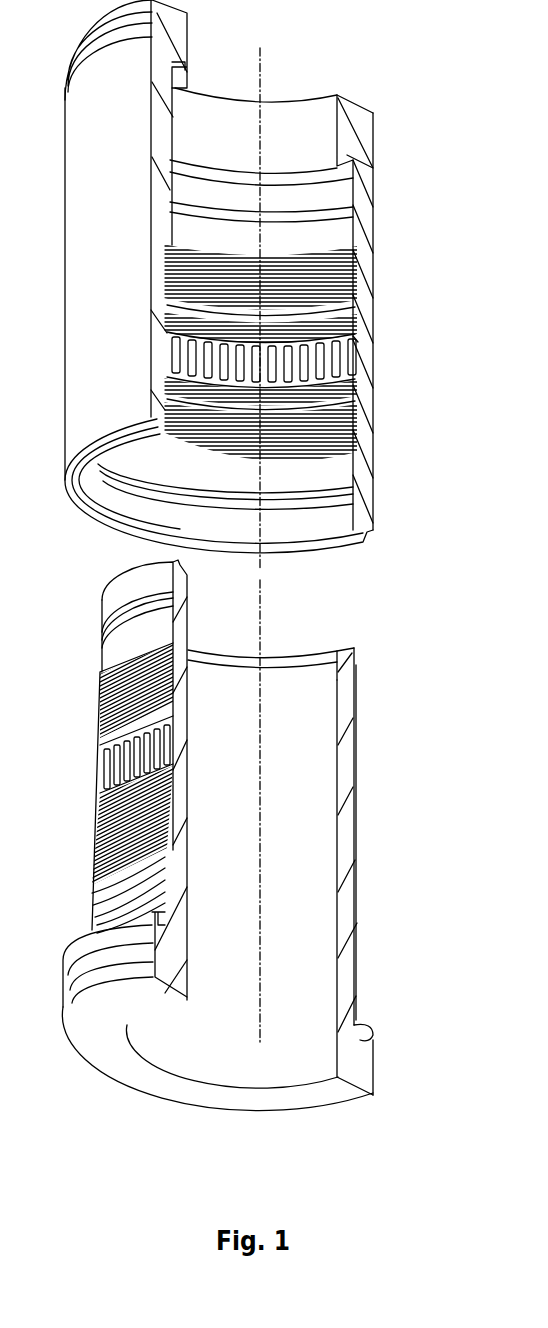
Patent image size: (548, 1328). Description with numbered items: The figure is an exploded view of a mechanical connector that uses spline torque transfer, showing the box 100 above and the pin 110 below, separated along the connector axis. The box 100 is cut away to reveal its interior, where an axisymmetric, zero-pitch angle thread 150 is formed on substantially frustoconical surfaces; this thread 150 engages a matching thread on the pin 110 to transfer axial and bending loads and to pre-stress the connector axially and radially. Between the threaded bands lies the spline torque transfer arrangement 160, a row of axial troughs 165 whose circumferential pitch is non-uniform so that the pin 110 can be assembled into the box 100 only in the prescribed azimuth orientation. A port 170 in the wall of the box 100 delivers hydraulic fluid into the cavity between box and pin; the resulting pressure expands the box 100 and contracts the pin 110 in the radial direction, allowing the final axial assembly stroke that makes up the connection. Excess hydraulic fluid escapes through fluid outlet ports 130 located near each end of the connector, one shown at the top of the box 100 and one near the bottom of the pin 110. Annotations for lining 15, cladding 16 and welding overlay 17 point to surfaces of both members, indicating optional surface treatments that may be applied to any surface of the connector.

The box 100 is at (371, 112).
The fluid outlet port 130 is at (373, 172).
The zero-pitch angle thread 150 is at (355, 310).
The spline torque transfer arrangement 160 is at (352, 338).
The spline trough 165 is at (340, 358).
The port 170 is at (457, 347).
The lining 15 is at (347, 463).
The cladding 16 is at (318, 482).
The welding overlay 17 is at (336, 498).
The pin 110 is at (359, 988).